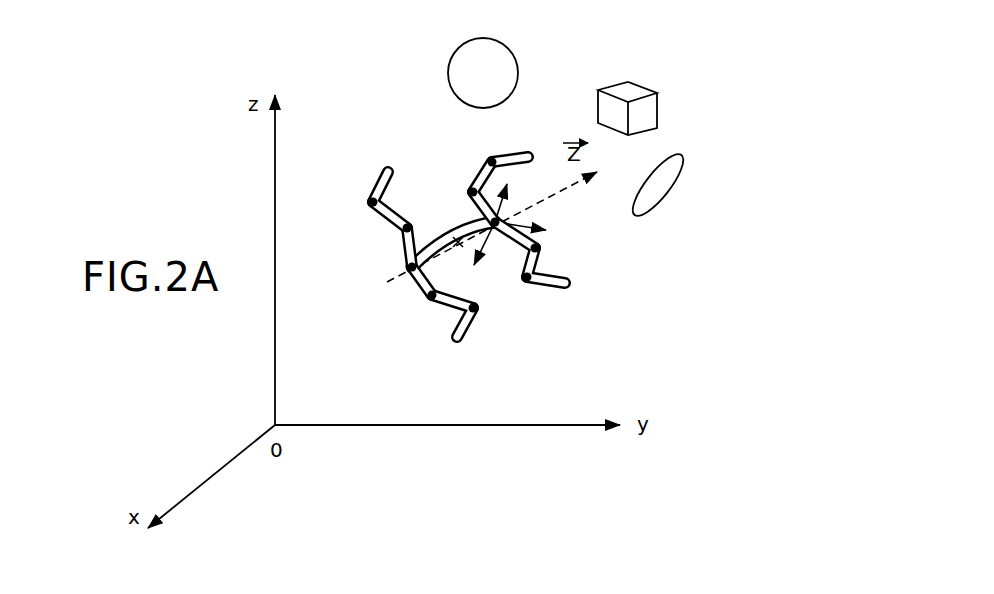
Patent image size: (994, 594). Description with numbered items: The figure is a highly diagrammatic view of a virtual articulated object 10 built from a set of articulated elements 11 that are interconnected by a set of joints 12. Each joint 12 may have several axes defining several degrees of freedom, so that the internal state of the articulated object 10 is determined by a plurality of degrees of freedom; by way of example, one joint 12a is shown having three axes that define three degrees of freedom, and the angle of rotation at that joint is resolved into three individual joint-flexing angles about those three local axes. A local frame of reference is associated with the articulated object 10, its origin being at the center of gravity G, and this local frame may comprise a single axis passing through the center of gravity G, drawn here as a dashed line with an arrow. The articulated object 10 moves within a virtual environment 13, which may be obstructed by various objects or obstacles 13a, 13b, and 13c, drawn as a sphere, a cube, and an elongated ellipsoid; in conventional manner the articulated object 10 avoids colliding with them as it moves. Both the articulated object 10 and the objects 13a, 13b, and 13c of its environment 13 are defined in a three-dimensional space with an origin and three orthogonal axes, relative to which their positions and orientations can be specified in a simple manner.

The virtual articulated object 10 is at (403, 153).
The articulated elements 11 is at (520, 155).
The joints 12 is at (488, 158).
The joint having three axes 12a is at (475, 220).
The center of gravity G is at (458, 242).
The virtual environment 13 is at (750, 157).
The object or obstacle 13a is at (487, 63).
The object or obstacle 13b is at (648, 105).
The object or obstacle 13c is at (670, 170).